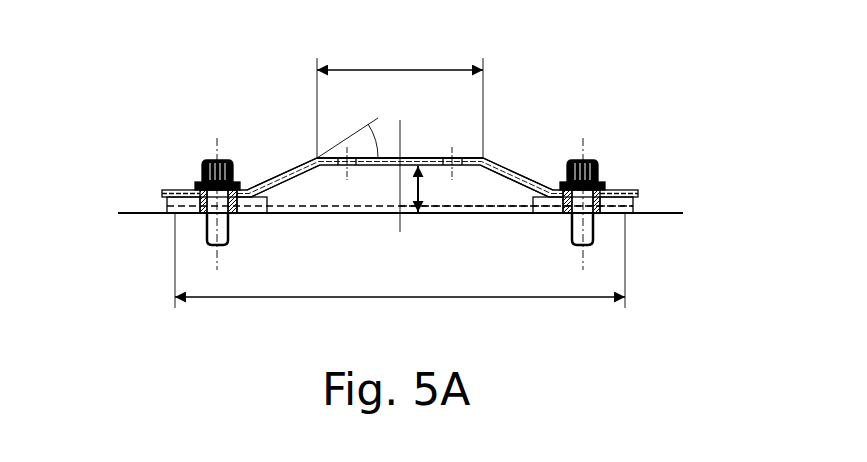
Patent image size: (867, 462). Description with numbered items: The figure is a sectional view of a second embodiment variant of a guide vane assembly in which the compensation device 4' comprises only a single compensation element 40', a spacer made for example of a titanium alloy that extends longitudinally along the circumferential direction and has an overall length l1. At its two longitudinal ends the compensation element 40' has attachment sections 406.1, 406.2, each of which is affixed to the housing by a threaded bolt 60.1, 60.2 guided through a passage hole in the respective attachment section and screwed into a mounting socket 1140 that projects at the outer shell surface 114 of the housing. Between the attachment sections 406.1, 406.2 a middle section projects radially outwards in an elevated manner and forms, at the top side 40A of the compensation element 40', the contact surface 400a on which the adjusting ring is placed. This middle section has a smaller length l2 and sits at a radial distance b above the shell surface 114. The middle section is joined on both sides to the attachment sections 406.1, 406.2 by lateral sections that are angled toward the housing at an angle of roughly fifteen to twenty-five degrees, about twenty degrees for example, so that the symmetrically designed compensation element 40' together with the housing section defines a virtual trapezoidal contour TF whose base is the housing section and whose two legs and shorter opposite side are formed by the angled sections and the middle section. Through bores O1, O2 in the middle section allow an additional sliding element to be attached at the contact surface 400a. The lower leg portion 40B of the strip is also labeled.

The outer shell surface 114 is at (680, 212).
The mounting socket 1140 is at (163, 192).
The attachment section 406.1 is at (192, 190).
The attachment section 406.2 is at (615, 198).
The threaded bolt 60.1 is at (215, 160).
The threaded bolt 60.2 is at (583, 160).
The compensation element 40' is at (400, 156).
The top side 40A is at (497, 167).
The second inclined leg of strip 40B is at (283, 203).
The contact surface 400a is at (417, 168).
The compensation device 4' is at (455, 88).
The through bore O1 is at (347, 180).
The through bore O2 is at (453, 178).
The trapezoidal contour TF is at (506, 207).
The length l1 is at (400, 273).
The length l2 is at (400, 99).
The radial distance b is at (429, 189).